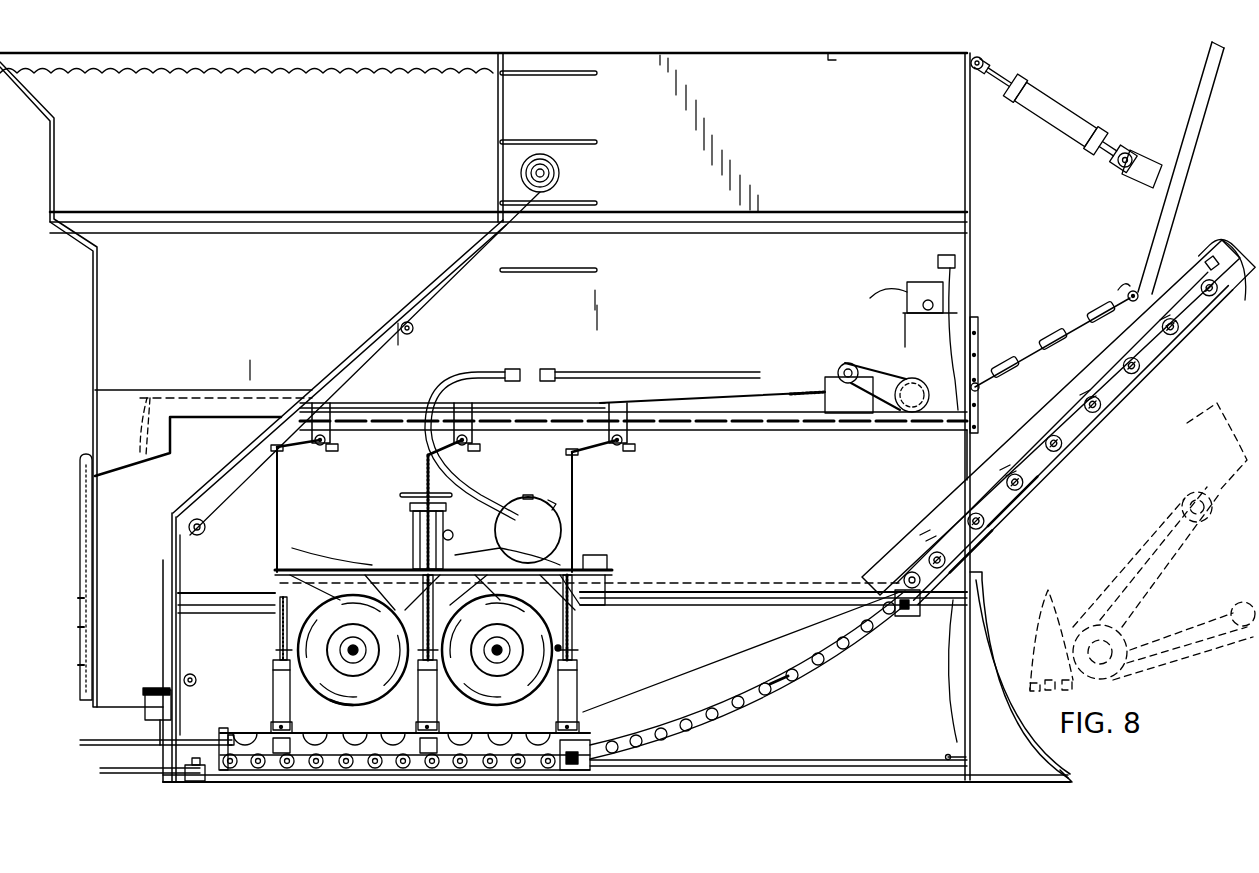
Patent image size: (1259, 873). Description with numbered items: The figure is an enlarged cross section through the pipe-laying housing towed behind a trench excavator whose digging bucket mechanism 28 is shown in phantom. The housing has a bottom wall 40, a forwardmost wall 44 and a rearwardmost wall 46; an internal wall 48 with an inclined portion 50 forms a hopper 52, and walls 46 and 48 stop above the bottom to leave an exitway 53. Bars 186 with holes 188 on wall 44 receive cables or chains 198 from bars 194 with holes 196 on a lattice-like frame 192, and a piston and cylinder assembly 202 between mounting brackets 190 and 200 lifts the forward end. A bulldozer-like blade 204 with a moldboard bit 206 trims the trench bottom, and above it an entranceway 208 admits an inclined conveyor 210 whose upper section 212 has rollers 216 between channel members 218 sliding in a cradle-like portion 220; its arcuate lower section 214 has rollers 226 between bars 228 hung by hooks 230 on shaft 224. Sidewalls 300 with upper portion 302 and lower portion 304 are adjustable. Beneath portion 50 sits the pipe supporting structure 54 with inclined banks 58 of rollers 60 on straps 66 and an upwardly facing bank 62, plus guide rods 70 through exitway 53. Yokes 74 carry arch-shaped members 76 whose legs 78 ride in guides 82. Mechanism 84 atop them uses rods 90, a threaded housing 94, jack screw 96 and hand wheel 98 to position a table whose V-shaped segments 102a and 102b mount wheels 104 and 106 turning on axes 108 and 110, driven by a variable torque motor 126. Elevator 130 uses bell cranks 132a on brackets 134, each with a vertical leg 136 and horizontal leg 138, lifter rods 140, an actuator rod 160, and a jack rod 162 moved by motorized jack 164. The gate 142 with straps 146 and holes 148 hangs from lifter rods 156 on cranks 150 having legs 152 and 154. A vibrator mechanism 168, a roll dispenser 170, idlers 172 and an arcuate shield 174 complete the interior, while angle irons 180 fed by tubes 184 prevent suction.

The digging bucket mechanism 28 is at (1152, 613).
The bottom wall 40 is at (858, 778).
The forwardmost wall 44 is at (970, 266).
The rearwardmost wall 46 is at (92, 294).
The internal wall 48 is at (498, 145).
The inclined portion 50 is at (372, 340).
The hopper 52 is at (214, 156).
The exitway 53 is at (154, 733).
The pipe section supporting structure 54 is at (528, 770).
The inclined banks of rollers 58 is at (345, 735).
The rollers 60 is at (500, 740).
The upwardly facing bank of rollers 62 is at (565, 771).
The straps 66 is at (231, 736).
The guide rod 70 is at (100, 742).
The yoke 74 is at (273, 724).
The arch-shaped member 76 is at (280, 622).
The leg portions 78 is at (278, 700).
The vertical guide 82 is at (278, 648).
The mechanism 84 is at (590, 560).
The rods 90 is at (312, 567).
The internally threaded housing 94 is at (412, 524).
The jack screw 96 is at (426, 471).
The hand wheel 98 is at (404, 494).
The V-shaped segment 102a is at (585, 580).
The V-shaped segment 102b is at (288, 585).
The wheel 104 is at (562, 648).
The wheel 106 is at (345, 708).
The axis 108 is at (500, 647).
The axis 110 is at (356, 647).
The variable torque motor 126 is at (528, 524).
The elevator 130 is at (550, 398).
The bell crank 132a is at (326, 441).
The brackets 134 is at (334, 451).
The vertical leg 136 is at (322, 410).
The horizontal leg 138 is at (300, 446).
The lifter rod 140 is at (277, 505).
The gate 142 is at (78, 665).
The straps 146 is at (78, 627).
The holes 148 is at (78, 598).
The bell crank 150 is at (138, 446).
The vertical leg 152 is at (145, 408).
The horizontal leg 154 is at (122, 462).
The lifter rod 156 is at (80, 474).
The actuator rod 160 is at (378, 403).
The jack rod 162 is at (790, 395).
The motorized jack 164 is at (858, 368).
The vibrator mechanism 168 is at (200, 781).
The roll type dispenser 170 is at (556, 170).
The idlers 172 is at (413, 326).
The arcuate shield 174 is at (156, 688).
The angle irons 180 is at (765, 421).
The tubes 184 is at (955, 380).
The vertical bars 186 is at (978, 320).
The holes 188 is at (978, 340).
The housing leveling mounting bracket 190 is at (982, 60).
The lattice-like frame 192 is at (1222, 238).
The bars 194 is at (1135, 285).
The holes 196 is at (1120, 290).
The cables or chains 198 is at (1040, 345).
The housing leveling mounting bracket 200 is at (1135, 160).
The piston and cylinder assembly 202 is at (1060, 112).
The bulldozer-like blade 204 is at (992, 640).
The moldboard bit 206 is at (1074, 779).
The entranceway 208 is at (965, 451).
The inclined conveyor 210 is at (1023, 500).
The upper section 212 is at (1068, 435).
The lower section 214 is at (782, 650).
The rollers 216 is at (1050, 455).
The channel members 218 is at (1032, 470).
The cradle-like portion 220 is at (1211, 262).
The shaft 224 is at (907, 616).
The rollers 226 is at (845, 648).
The bars 228 is at (795, 678).
The hooks 230 is at (899, 577).
The sidewall 300 is at (848, 591).
The upper portion 302 is at (1052, 398).
The lower portion 304 is at (725, 690).